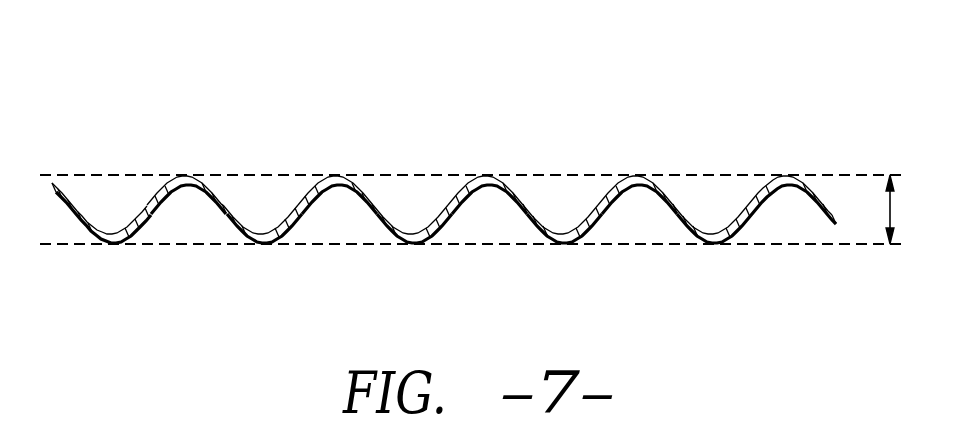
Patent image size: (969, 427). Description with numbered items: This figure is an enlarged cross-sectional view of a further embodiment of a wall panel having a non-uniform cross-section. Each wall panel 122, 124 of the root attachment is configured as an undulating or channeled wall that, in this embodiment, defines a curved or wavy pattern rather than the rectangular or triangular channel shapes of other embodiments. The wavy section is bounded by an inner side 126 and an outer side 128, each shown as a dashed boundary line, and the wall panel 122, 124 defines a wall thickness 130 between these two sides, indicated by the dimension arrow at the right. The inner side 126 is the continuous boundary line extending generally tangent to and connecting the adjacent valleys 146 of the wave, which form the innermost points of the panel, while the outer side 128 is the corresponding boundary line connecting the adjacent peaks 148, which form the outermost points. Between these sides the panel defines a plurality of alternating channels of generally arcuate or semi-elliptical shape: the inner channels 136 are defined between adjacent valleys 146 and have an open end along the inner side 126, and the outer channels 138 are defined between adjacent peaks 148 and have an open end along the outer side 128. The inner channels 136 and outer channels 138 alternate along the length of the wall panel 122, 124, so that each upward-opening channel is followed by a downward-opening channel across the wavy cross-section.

The wall panel 122 is at (444, 168).
The wall panel 124 is at (135, 40).
The inner side 126 is at (218, 246).
The outer side 128 is at (268, 175).
The wall thickness 130 is at (893, 210).
The inner channels 136 is at (184, 222).
The outer channels 138 is at (250, 190).
The valleys 146 is at (263, 247).
The peaks 148 is at (188, 176).